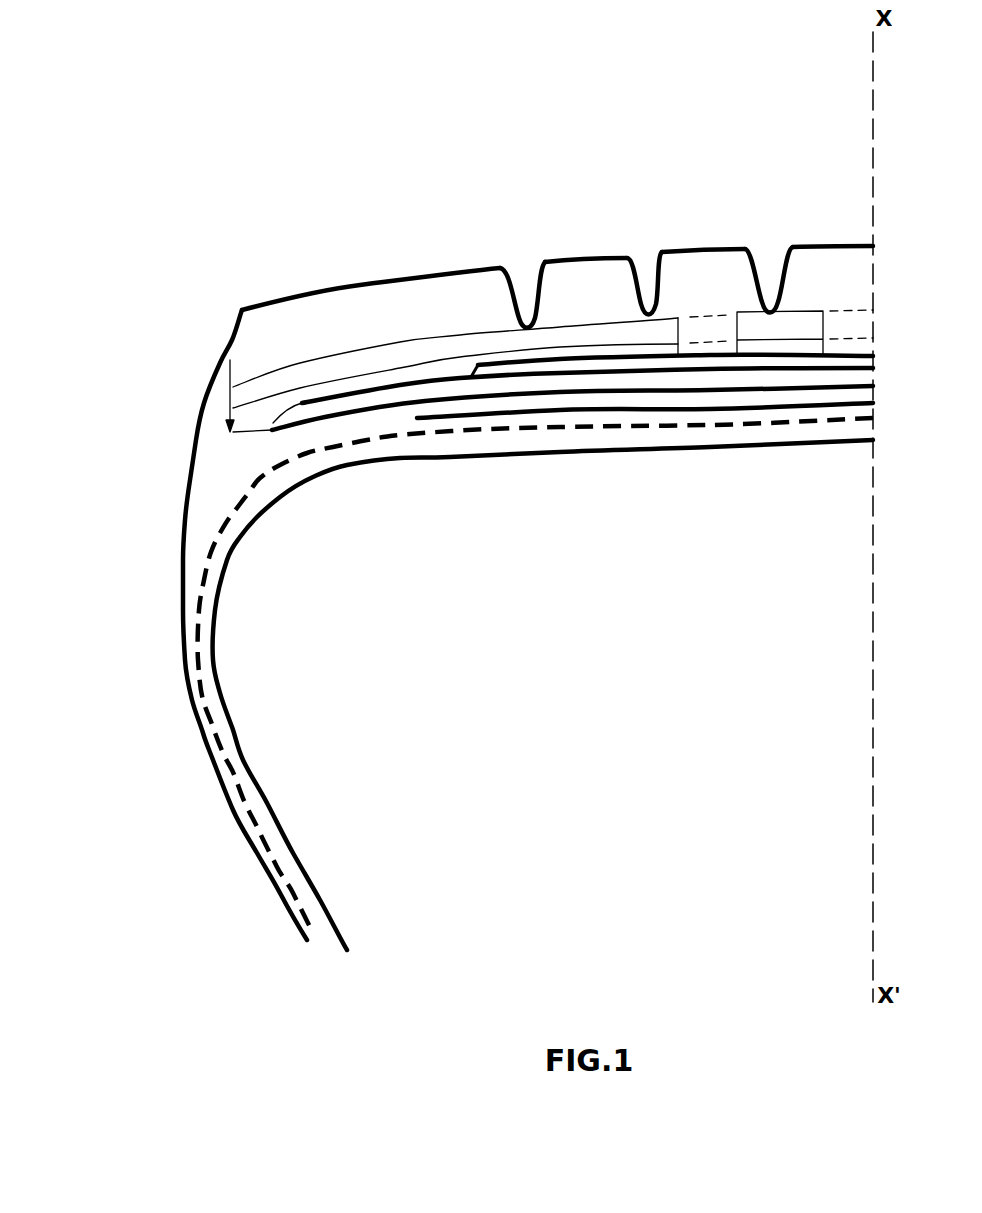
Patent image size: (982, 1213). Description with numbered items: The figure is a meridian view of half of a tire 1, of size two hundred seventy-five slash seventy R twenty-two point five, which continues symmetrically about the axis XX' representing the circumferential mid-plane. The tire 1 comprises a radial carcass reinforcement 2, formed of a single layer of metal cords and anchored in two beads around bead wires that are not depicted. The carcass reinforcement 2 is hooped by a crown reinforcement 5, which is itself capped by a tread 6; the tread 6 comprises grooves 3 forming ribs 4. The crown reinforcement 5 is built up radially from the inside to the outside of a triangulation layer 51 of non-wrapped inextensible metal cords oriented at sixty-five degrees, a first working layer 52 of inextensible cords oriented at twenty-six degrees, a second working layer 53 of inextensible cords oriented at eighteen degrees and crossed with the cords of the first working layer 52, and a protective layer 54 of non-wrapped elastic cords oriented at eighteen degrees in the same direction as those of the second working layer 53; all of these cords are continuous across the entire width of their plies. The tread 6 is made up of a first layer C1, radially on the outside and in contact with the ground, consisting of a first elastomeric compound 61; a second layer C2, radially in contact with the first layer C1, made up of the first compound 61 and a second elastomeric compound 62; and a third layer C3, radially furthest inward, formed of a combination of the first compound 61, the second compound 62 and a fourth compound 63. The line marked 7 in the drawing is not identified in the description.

The tire 1 is at (198, 362).
The radial carcass reinforcement 2 is at (212, 533).
The grooves 3 is at (526, 284).
The ribs 4 is at (585, 295).
The crown reinforcement 5 is at (595, 447).
The triangulation layer 51 is at (615, 413).
The first working layer 52 is at (720, 392).
The second working layer 53 is at (520, 383).
The protective layer 54 is at (578, 363).
The tread 6 is at (580, 356).
The first elastomeric compound 61 is at (283, 327).
The second elastomeric compound 62 is at (367, 367).
The fourth compound 63 is at (418, 370).
The boundary interface 7 is at (435, 333).
The first layer C1 is at (257, 330).
The second layer C2 is at (236, 395).
The third layer C3 is at (218, 430).